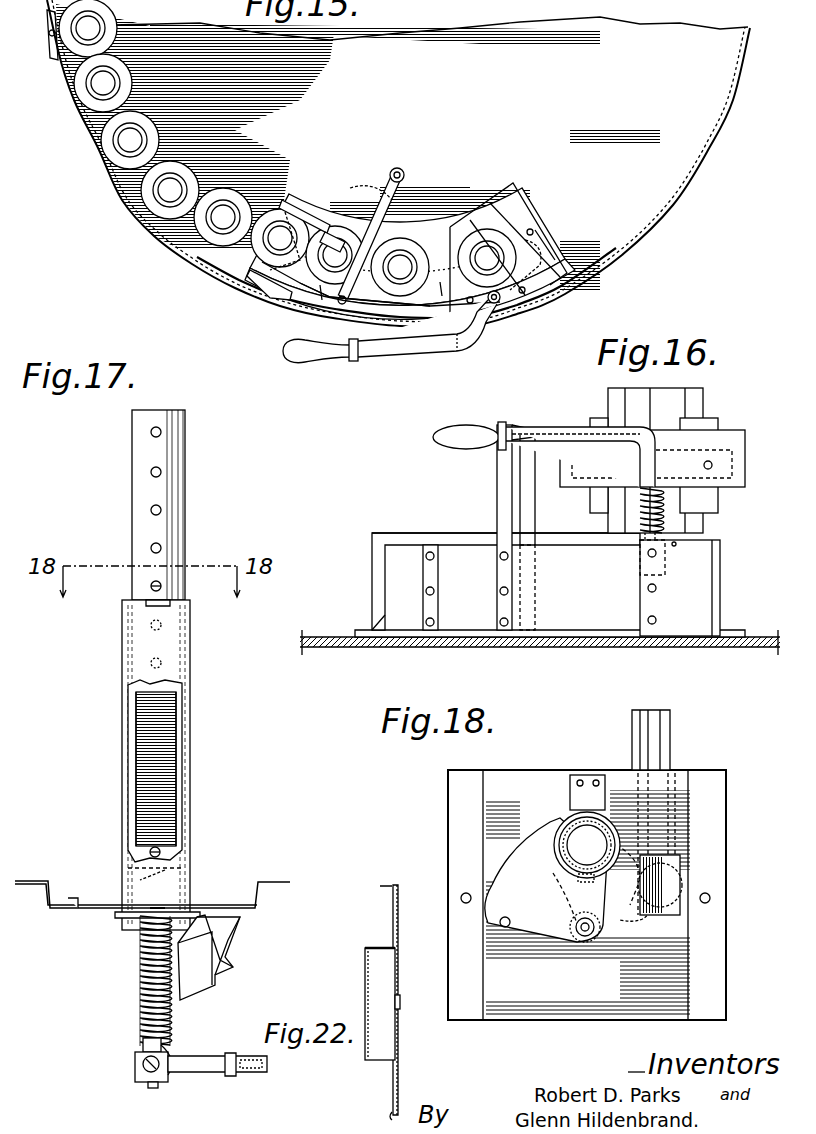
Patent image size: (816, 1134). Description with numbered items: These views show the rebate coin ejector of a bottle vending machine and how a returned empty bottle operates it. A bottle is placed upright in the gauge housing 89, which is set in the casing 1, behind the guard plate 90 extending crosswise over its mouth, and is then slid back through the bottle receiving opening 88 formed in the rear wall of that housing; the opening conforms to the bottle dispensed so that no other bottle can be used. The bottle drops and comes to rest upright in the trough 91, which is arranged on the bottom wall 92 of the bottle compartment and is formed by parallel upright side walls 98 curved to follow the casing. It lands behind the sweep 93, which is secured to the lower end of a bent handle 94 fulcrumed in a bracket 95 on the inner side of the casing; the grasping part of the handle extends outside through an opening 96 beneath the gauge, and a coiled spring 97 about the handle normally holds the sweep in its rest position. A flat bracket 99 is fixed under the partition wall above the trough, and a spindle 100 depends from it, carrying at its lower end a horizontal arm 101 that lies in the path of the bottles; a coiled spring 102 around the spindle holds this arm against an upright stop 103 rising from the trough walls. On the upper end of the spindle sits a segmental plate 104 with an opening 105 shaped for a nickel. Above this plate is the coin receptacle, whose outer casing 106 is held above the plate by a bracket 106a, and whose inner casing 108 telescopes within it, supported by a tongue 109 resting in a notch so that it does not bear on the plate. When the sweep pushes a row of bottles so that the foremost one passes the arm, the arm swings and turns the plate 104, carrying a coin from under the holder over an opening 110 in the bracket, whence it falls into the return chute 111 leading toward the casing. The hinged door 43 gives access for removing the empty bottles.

In FIG. 22, the casing 1 is at (398, 916).
In FIG. 15, the hinged door 43 is at (398, 163).
In FIG. 22, the bottle receiving opening 88 is at (366, 974).
In FIG. 22, the gauge housing 89 is at (372, 950).
In FIG. 22, the guard plate 90 is at (401, 1002).
In FIG. 15, the trough 91 is at (430, 245).
In FIG. 15, the bottom wall 92 is at (285, 39).
In FIG. 15, the sweep 93 is at (545, 245).
In FIG. 16, the sweep 93 is at (700, 600).
In FIG. 15, the bent handle 94 is at (407, 350).
In FIG. 16, the bent handle 94 is at (530, 426).
In FIG. 15, the bracket 95 is at (503, 303).
In FIG. 16, the opening 96 is at (400, 552).
In FIG. 16, the coiled spring 97 is at (665, 505).
In FIG. 15, the upright side walls 98 is at (285, 205).
In FIG. 17, the flat bracket 99 is at (48, 880).
In FIG. 18, the flat bracket 99 is at (532, 1003).
In FIG. 15, the spindle 100 is at (398, 168).
In FIG. 17, the spindle 100 is at (140, 1050).
In FIG. 18, the spindle 100 is at (584, 932).
In FIG. 15, the arm 101 is at (380, 190).
In FIG. 17, the arm 101 is at (210, 1074).
In FIG. 17, the coiled spring 102 is at (140, 988).
In FIG. 15, the upright stop 103 is at (365, 302).
In FIG. 16, the upright stop 103 is at (500, 498).
In FIG. 17, the segmental plate 104 is at (110, 906).
In FIG. 18, the segmental plate 104 is at (535, 842).
In FIG. 18, the opening 105 is at (615, 920).
In FIG. 17, the outer casing 106 is at (190, 780).
In FIG. 17, the bracket 106a is at (168, 868).
In FIG. 18, the bracket 106a is at (575, 800).
In FIG. 17, the inner casing 108 is at (176, 458).
In FIG. 18, the inner casing 108 is at (566, 850).
In FIG. 17, the tongue 109 is at (150, 605).
In FIG. 18, the opening 110 is at (665, 910).
In FIG. 17, the return chute 111 is at (225, 986).
In FIG. 18, the return chute 111 is at (668, 735).